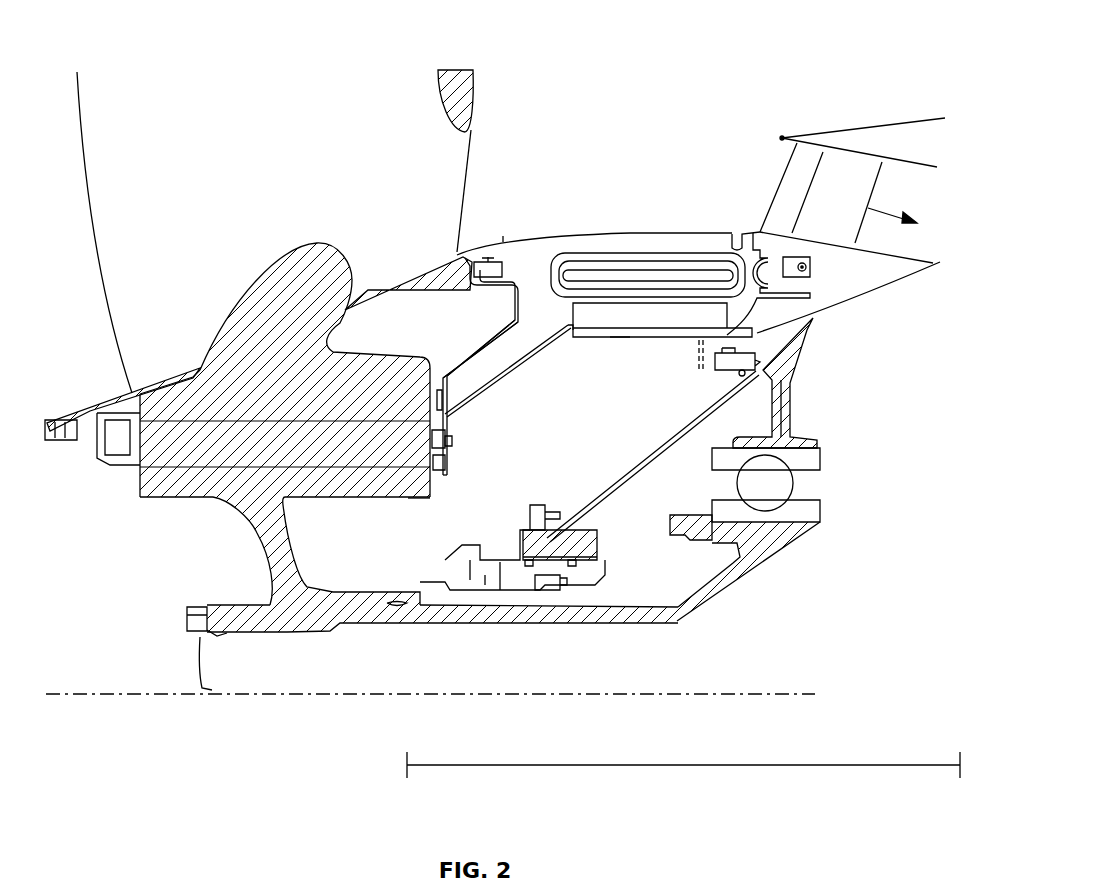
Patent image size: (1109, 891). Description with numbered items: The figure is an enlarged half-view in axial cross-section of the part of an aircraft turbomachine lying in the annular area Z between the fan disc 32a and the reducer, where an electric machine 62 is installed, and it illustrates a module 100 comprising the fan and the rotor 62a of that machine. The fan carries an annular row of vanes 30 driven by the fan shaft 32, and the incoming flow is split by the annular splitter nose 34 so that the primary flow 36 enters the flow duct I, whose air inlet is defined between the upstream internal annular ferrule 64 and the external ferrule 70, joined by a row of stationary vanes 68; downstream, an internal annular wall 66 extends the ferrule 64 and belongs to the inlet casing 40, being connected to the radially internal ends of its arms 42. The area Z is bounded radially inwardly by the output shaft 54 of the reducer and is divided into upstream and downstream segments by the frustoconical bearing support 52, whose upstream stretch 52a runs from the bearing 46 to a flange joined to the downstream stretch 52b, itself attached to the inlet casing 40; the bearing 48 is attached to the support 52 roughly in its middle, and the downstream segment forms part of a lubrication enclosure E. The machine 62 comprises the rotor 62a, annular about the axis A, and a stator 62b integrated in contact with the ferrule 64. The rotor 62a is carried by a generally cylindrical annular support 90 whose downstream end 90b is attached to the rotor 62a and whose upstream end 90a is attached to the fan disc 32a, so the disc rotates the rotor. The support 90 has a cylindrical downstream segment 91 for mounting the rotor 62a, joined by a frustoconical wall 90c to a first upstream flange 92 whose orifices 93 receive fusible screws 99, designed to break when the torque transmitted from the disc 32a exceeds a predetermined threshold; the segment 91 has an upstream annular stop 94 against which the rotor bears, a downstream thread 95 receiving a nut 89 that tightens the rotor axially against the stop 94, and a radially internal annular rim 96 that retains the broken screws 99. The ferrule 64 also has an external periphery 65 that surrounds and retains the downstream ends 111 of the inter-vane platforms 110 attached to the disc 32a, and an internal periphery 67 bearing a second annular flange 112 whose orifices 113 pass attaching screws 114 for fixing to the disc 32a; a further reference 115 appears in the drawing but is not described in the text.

The vanes 30 is at (240, 137).
The fan shaft 32 is at (278, 590).
The fan disc 32a is at (178, 489).
The annular splitter nose 34 is at (781, 136).
The primary flow 36 is at (912, 186).
The inlet casing 40 is at (868, 124).
The radially internal arms 42 is at (912, 184).
The bearing 46 is at (550, 592).
The bearing 48 is at (790, 482).
The bearing support 52 is at (744, 407).
The upstream stretch 52a is at (630, 490).
The downstream stretch 52b is at (807, 328).
The output shaft 54 is at (740, 570).
The electric machine 62 is at (563, 302).
The rotor 62a is at (653, 328).
The stator 62b is at (698, 256).
The upstream annular ferrule 64 is at (613, 235).
The external periphery 65 is at (503, 242).
The downstream internal annular wall 66 is at (930, 262).
The internal periphery 67 is at (518, 280).
The stationary vanes 68 is at (793, 175).
The external ferrule 70 is at (840, 148).
The nut 89 is at (812, 267).
The annular support 90 is at (577, 338).
The upstream end 90a is at (440, 480).
The downstream end 90b is at (757, 355).
The frustoconical wall 90c is at (510, 378).
The cylindrical downstream segment 91 is at (618, 338).
The first upstream annular flange 92 is at (448, 432).
The orifices 93 is at (444, 466).
The upstream annular stop 94 is at (503, 330).
The downstream thread 95 is at (735, 328).
The radially internal annular rim 96 is at (700, 372).
The fusible screws 99 is at (452, 446).
The module 100 is at (430, 234).
The inter-vane platforms 110 is at (245, 303).
The downstream ends 111 is at (463, 258).
The second annular flange 112 is at (392, 405).
The orifices 113 is at (432, 410).
The attaching screws 114 is at (452, 394).
The corner 115 is at (408, 498).
The axis A is at (781, 694).
The annular area Z is at (683, 776).
The enclosure E is at (826, 431).
The flow duct I is at (876, 201).